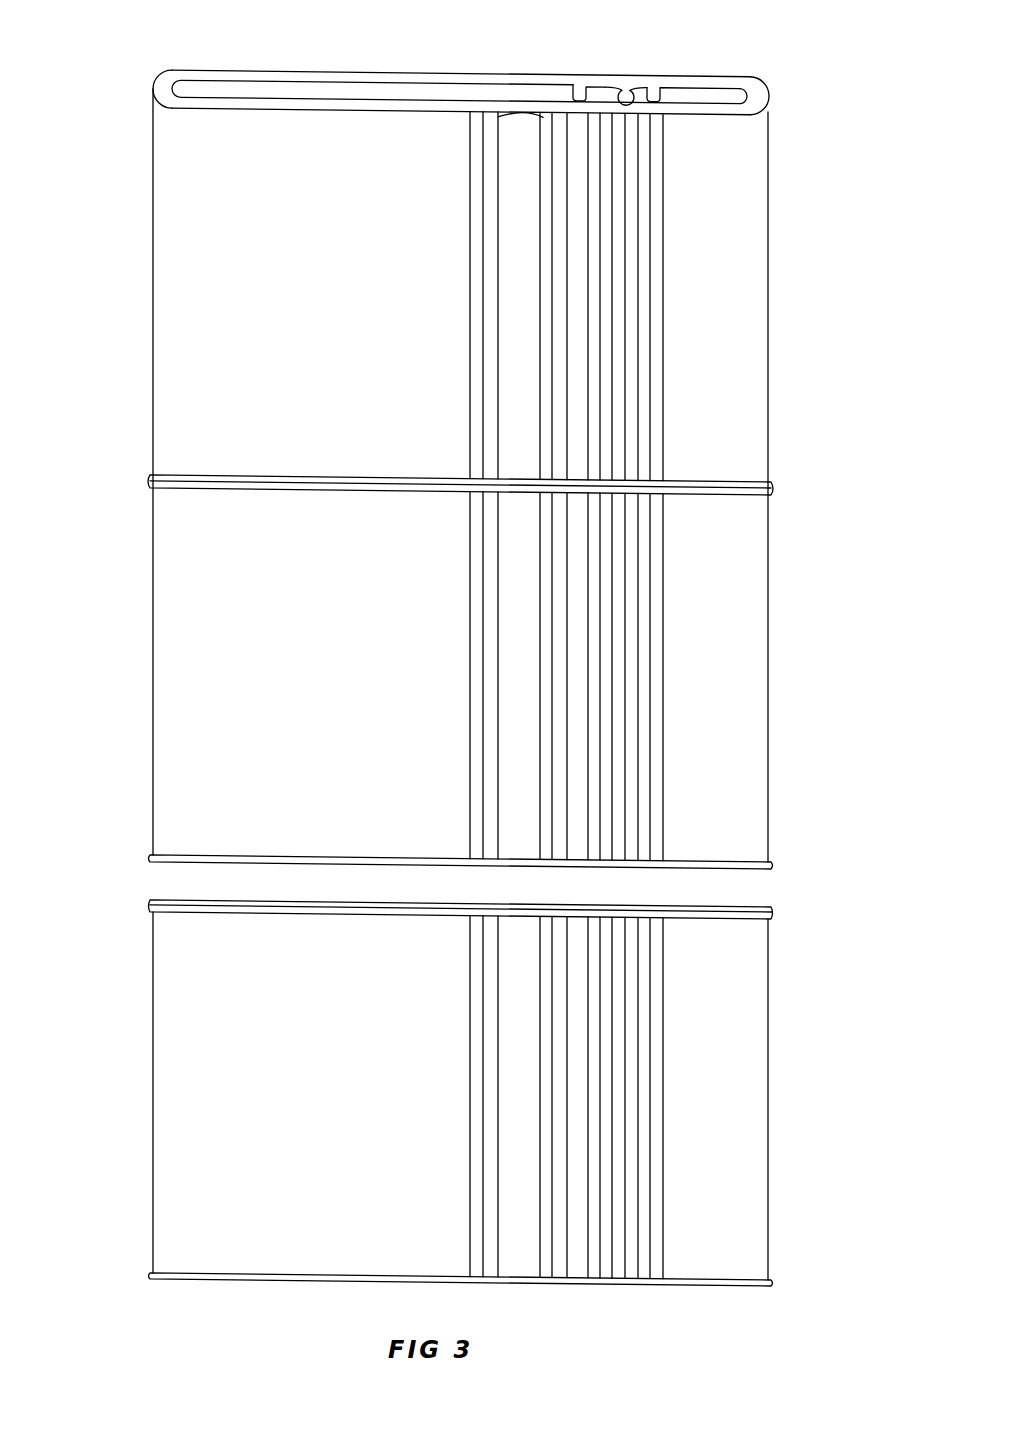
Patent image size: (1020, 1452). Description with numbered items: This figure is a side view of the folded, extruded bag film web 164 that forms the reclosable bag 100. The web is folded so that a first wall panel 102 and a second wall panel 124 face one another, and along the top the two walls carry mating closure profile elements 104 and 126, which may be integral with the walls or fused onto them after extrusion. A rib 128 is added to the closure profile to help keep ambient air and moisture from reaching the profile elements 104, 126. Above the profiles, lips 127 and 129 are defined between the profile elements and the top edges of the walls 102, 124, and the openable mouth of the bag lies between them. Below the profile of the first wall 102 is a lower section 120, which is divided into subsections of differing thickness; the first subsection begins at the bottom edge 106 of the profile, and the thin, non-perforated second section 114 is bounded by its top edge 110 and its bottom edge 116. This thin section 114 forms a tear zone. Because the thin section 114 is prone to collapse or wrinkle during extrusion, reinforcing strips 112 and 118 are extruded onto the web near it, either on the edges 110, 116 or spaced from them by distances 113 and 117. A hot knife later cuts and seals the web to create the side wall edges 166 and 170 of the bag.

The reclosable bag 100 is at (168, 897).
The first wall panel 102 is at (727, 107).
The closure profile element 104 is at (615, 87).
The bottom edge of profile 106 is at (575, 88).
The top edge of second subsection 110 is at (558, 112).
The reinforcing strip 112 is at (473, 110).
The distance 113 is at (546, 218).
The non-perforated thin section 114 is at (520, 122).
The bottom edge of second subsection 116 is at (497, 293).
The distance 117 is at (492, 115).
The reinforcing strip 118 is at (560, 100).
The lower section 120 is at (383, 123).
The second wall panel 124 is at (740, 85).
The closure profile element 126 is at (627, 90).
The lip 127 is at (680, 118).
The rib 128 is at (657, 88).
The lip 129 is at (738, 80).
The bag film web 164 is at (314, 78).
The first side edge 166 is at (308, 112).
The second side edge 170 is at (327, 488).